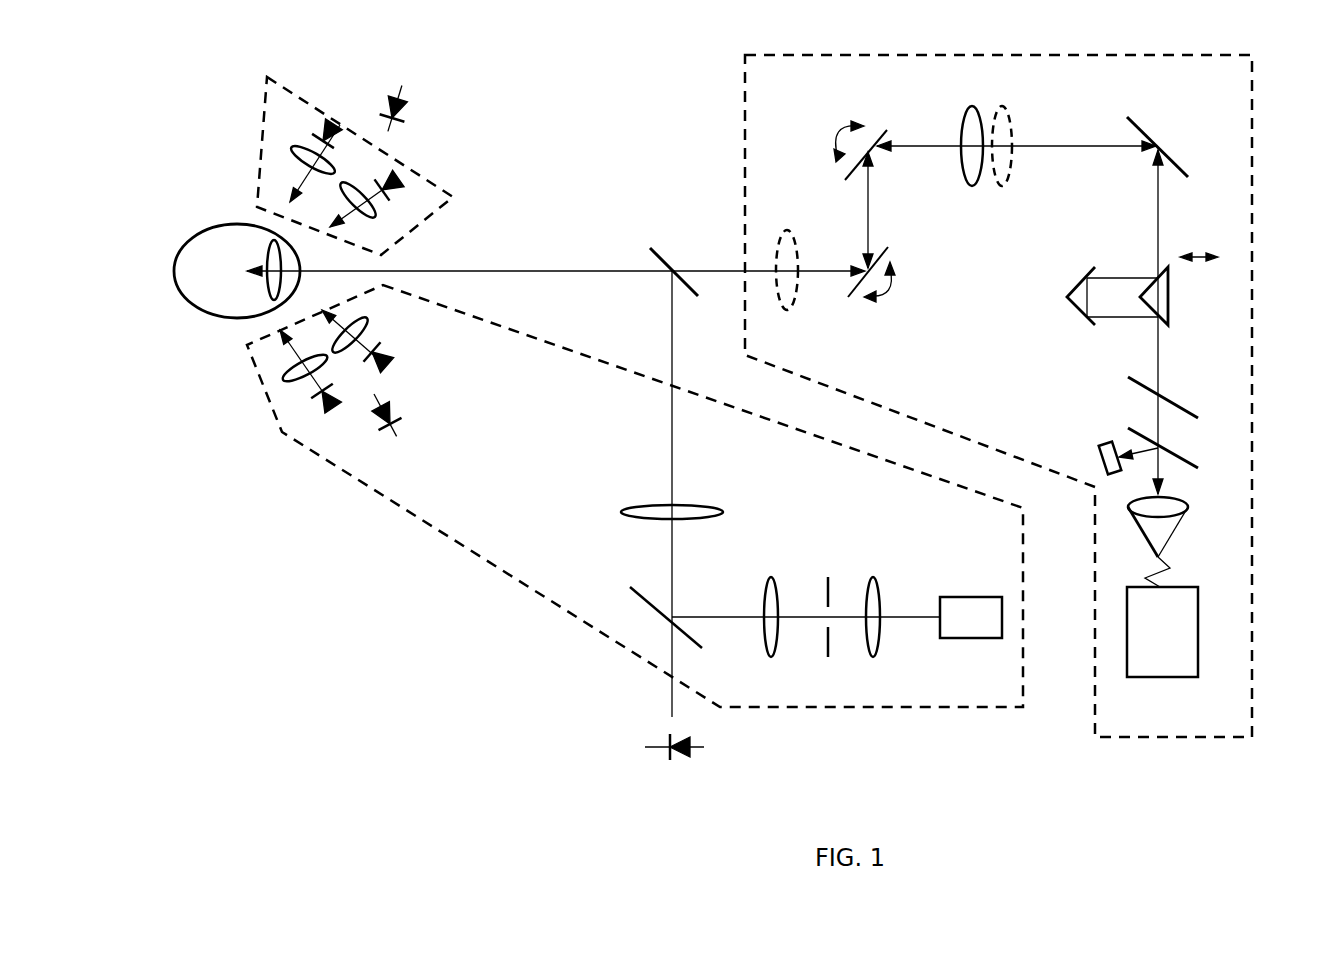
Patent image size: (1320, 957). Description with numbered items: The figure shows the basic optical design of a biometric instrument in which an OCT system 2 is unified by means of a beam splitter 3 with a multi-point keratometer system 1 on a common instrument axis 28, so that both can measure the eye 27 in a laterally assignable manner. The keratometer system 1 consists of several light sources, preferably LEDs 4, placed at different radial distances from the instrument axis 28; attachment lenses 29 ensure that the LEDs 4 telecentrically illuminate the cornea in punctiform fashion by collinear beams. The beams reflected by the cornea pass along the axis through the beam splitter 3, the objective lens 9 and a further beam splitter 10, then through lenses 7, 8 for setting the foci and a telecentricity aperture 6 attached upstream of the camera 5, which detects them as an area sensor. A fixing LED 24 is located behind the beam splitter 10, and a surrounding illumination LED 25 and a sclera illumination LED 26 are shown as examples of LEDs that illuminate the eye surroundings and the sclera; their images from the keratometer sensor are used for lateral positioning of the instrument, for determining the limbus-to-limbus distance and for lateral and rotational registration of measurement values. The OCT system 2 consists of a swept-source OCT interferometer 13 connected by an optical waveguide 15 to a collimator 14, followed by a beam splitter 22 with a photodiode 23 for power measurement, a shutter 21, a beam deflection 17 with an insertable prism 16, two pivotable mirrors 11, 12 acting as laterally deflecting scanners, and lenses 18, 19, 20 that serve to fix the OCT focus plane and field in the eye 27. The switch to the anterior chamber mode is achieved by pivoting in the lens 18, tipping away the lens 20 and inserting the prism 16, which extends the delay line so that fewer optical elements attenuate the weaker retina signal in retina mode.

The keratometer system 1 is at (262, 122).
The OCT system 2 is at (1252, 397).
The beam splitter 3 is at (674, 262).
The LED 4 is at (347, 271).
The camera, area sensor 5 is at (971, 602).
The telecentricity aperture 6 is at (821, 601).
The lens for setting the foci 7 is at (872, 601).
The lens for setting the foci 8 is at (770, 601).
The objective lens 9 is at (680, 512).
The beam splitter 10 is at (660, 617).
The pivotable mirror 11 is at (892, 274).
The pivotable mirror 12 is at (865, 143).
The OCT interferometer 13 is at (1162, 648).
The collimator 14 is at (1172, 527).
The optical waveguide 15 is at (1172, 571).
The insertable prism 16 is at (1179, 289).
The beam deflection 17 is at (1095, 296).
The lens for setting the foci and the field 18 is at (1003, 130).
The lens for setting the foci and the field 19 is at (961, 130).
The lens for setting the foci and the field 20 is at (780, 257).
The shutter 21 is at (1172, 397).
The beam splitter 22 is at (1172, 448).
The photodiode power measurement 23 is at (1110, 450).
The fixing LED 24 is at (670, 760).
The surrounding illumination LED 25 is at (410, 108).
The sclera illumination LED 26 is at (401, 426).
The eye 27 is at (225, 270).
The instrument axis 28 is at (722, 196).
The attachment lens 29 is at (363, 267).